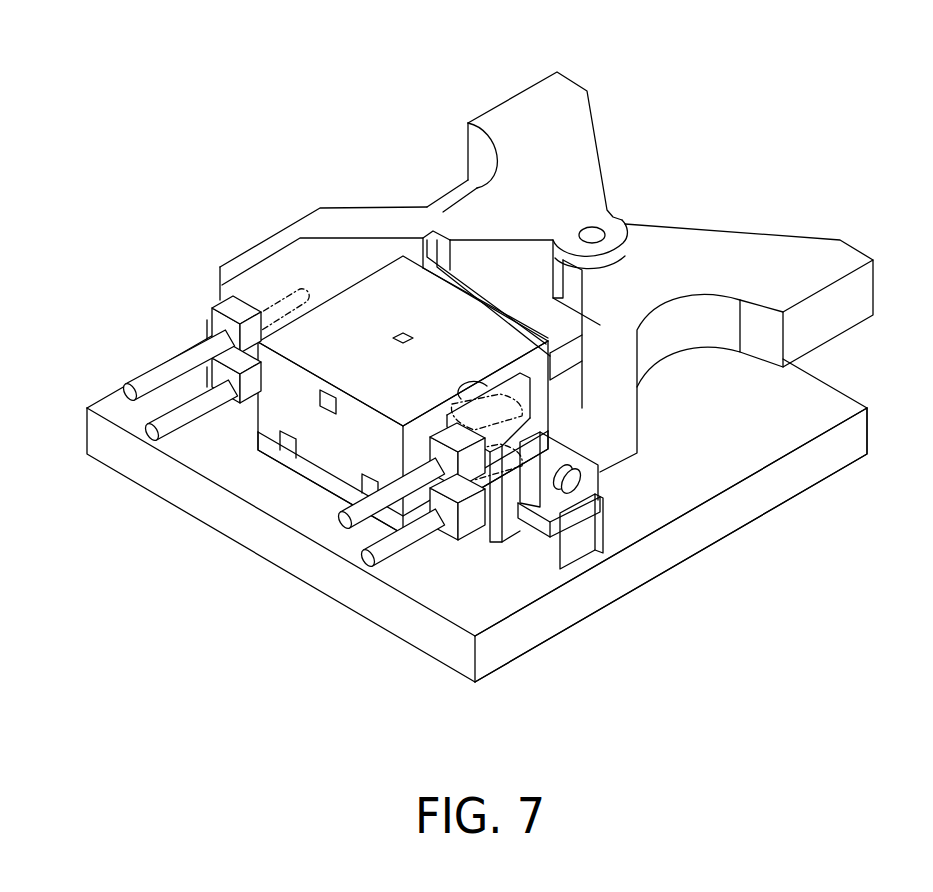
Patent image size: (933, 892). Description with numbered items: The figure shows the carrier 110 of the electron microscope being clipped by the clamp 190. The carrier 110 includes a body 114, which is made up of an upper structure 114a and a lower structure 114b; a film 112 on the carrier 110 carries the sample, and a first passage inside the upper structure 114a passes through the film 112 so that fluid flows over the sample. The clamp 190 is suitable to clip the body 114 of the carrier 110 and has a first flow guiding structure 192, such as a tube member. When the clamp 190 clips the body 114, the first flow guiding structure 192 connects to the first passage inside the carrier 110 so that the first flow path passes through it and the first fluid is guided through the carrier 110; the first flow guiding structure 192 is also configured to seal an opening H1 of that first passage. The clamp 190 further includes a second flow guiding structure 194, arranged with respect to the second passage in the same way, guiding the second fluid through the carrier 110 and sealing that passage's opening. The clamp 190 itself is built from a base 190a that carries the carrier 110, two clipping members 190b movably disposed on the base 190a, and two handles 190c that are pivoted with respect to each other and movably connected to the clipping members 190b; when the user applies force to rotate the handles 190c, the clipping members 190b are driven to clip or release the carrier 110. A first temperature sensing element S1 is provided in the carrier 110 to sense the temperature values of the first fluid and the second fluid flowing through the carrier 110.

The carrier 110 is at (328, 510).
The film 112 is at (409, 333).
The body 114 is at (220, 637).
The upper structure 114a is at (293, 377).
The lower structure 114b is at (320, 442).
The clamp 190 is at (856, 358).
The base 190a is at (745, 432).
The clipping members 190b is at (208, 422).
The handles 190c is at (672, 268).
The first flow guiding structure 192 is at (310, 312).
The second flow guiding structure 194 is at (160, 423).
The opening H1 is at (472, 380).
The first temperature sensing element S1 is at (328, 413).